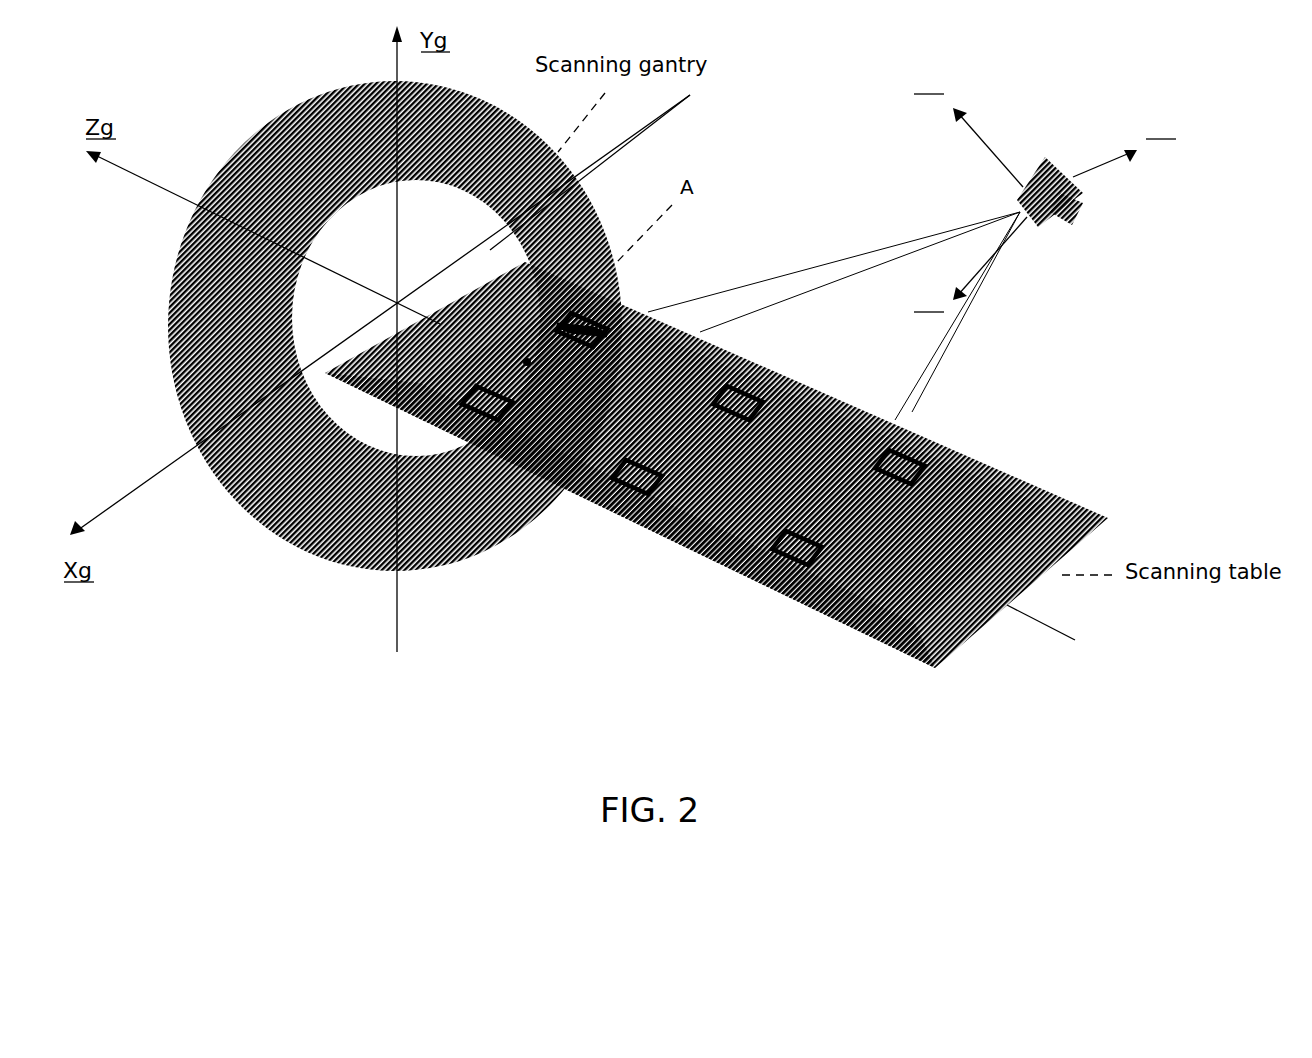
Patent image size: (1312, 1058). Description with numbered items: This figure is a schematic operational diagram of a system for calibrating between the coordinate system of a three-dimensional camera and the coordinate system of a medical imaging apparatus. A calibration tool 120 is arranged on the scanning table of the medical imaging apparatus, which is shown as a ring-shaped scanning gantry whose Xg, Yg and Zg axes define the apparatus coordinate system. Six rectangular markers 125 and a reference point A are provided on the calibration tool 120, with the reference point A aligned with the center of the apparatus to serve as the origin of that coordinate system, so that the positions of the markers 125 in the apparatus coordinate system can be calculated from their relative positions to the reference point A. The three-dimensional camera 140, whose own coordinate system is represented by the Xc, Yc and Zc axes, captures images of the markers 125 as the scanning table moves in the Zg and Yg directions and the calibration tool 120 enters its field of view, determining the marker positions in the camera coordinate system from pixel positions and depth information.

The calibration tool 120 is at (1000, 470).
The markers 125 is at (663, 540).
The 3D camera 140 is at (1090, 203).